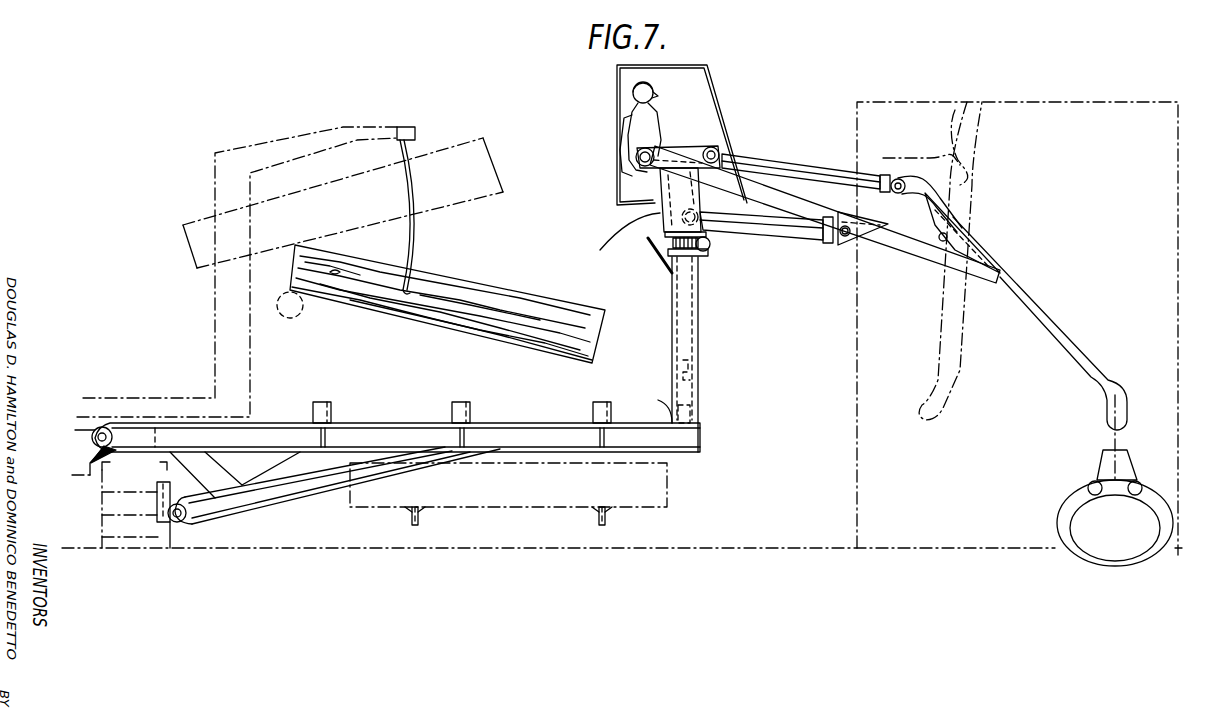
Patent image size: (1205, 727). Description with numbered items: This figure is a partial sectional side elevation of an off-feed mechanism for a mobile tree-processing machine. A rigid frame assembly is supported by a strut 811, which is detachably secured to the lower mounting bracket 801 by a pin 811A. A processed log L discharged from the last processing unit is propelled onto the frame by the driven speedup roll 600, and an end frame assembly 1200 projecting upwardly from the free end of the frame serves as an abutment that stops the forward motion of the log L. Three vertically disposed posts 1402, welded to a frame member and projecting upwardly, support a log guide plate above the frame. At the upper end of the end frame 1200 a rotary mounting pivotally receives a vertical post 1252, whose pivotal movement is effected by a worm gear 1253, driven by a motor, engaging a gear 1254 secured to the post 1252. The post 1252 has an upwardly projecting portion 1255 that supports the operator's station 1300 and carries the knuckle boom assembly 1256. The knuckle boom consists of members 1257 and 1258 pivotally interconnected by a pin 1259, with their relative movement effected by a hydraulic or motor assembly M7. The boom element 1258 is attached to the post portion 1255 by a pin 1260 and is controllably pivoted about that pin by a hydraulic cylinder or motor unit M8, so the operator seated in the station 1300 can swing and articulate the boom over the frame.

The operator's station 1300 is at (607, 100).
The pin 1260 is at (656, 153).
The post portion 1255 is at (672, 207).
The gear 1254 is at (658, 229).
The worm gear 1253 is at (712, 246).
The end frame assembly 1200 is at (678, 354).
The vertical post 1252 is at (688, 292).
The hydraulic or motor assembly M7 is at (823, 174).
The hydraulic cylinder or motor unit M8 is at (823, 246).
The boom element 1258 is at (832, 206).
The pin 1259 is at (941, 242).
The knuckle boom assembly 1256 is at (996, 245).
The boom member 1257 is at (1037, 307).
The posts 1402 is at (328, 412).
The log L is at (452, 292).
The driven speedup roll 600 is at (292, 303).
The lower mounting bracket 801 is at (152, 500).
The strut 811 is at (334, 520).
The pin 811A is at (178, 520).